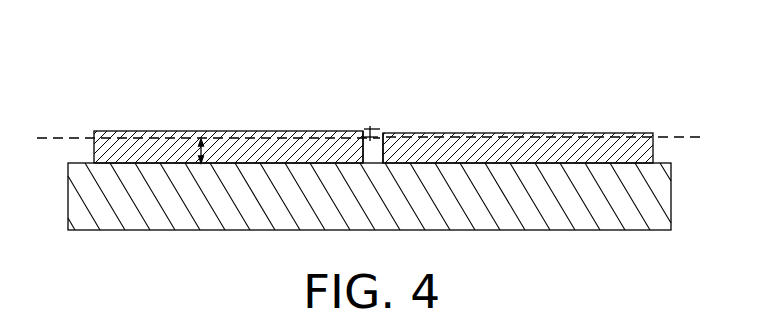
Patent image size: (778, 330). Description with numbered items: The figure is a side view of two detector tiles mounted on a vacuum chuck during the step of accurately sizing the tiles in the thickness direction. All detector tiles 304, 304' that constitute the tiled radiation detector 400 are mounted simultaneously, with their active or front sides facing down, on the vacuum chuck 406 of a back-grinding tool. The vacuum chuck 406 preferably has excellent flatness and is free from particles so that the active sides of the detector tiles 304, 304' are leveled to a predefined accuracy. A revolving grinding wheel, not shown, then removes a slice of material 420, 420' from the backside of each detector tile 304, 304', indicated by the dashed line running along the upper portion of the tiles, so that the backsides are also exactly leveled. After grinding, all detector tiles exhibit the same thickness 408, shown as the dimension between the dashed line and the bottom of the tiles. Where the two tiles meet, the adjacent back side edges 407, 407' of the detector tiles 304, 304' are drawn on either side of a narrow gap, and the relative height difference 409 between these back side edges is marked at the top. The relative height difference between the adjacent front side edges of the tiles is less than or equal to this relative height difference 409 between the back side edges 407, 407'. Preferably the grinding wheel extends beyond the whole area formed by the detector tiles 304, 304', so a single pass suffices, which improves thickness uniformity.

The tiled radiation detector 400 is at (600, 55).
The detector tile 304 is at (189, 153).
The detector tile 304' is at (559, 154).
The vacuum chuck 406 is at (660, 195).
The back side edge 407 is at (342, 115).
The back side edge 407' is at (409, 115).
The thickness 408 is at (203, 147).
The relative height difference 409 is at (370, 129).
The slice of material 420 is at (201, 123).
The slice of material 420' is at (557, 122).